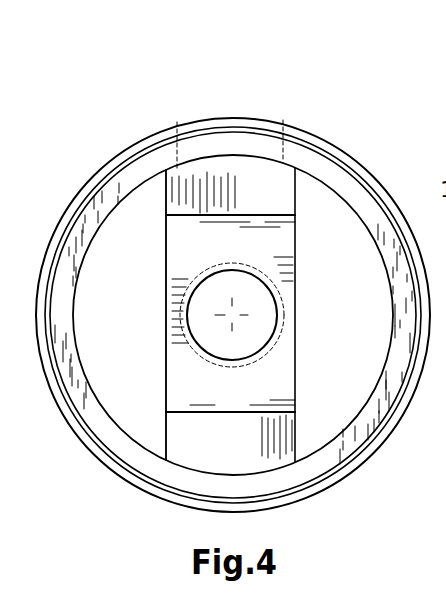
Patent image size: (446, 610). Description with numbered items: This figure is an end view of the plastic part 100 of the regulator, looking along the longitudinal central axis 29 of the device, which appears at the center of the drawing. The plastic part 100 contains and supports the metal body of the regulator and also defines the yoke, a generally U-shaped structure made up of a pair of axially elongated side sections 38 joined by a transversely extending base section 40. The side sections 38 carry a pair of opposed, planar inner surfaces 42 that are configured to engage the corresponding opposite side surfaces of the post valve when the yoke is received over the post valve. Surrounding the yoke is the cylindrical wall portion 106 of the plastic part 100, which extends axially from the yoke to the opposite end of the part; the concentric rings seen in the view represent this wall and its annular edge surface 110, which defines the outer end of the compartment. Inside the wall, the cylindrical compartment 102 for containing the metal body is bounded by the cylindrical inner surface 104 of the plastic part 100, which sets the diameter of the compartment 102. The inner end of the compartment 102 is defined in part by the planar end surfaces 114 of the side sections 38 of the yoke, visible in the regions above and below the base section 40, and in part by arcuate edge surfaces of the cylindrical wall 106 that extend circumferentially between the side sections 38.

The plastic part 100 is at (187, 106).
The cylindrical wall portion 106 is at (230, 118).
The annular edge surface 110 is at (92, 217).
The planar end surfaces 114 is at (233, 156).
The cylindrical compartment 102 is at (229, 257).
The cylindrical inner surface 104 is at (267, 187).
The planar inner surfaces 42 is at (186, 215).
The side sections 38 is at (166, 185).
The base section 40 is at (166, 360).
The longitudinal central axis 29 is at (232, 315).